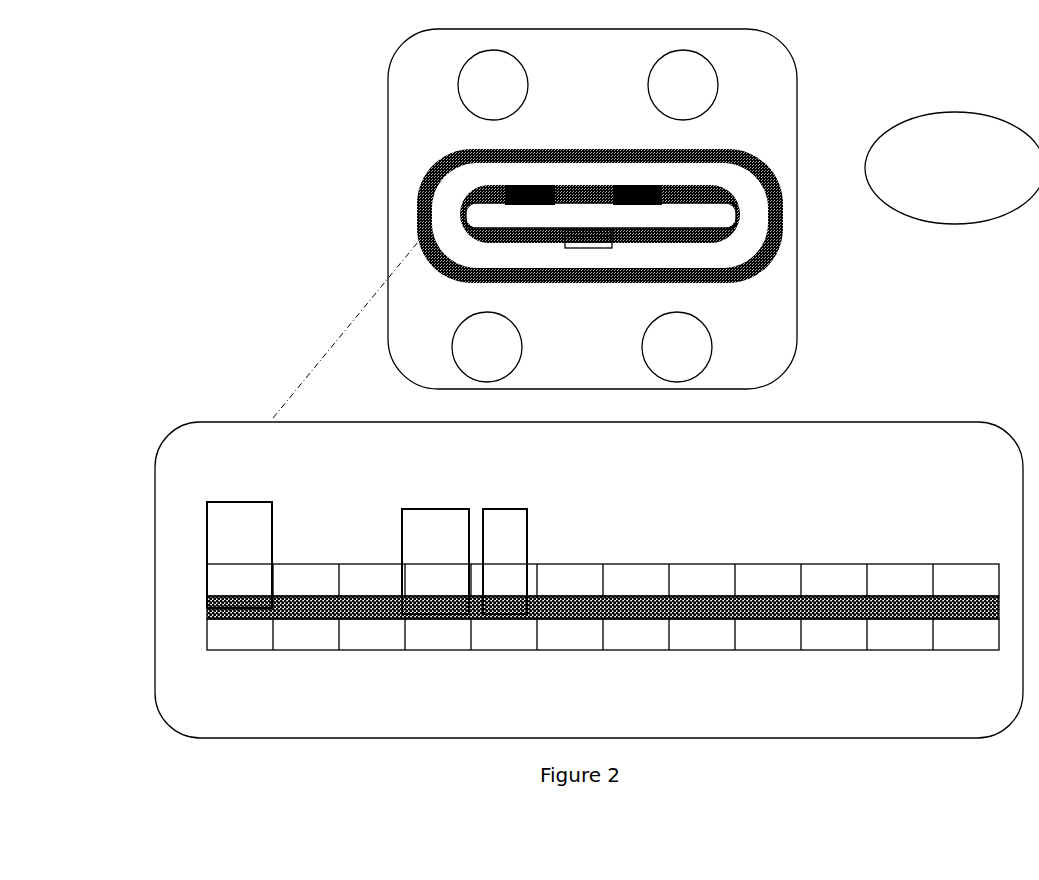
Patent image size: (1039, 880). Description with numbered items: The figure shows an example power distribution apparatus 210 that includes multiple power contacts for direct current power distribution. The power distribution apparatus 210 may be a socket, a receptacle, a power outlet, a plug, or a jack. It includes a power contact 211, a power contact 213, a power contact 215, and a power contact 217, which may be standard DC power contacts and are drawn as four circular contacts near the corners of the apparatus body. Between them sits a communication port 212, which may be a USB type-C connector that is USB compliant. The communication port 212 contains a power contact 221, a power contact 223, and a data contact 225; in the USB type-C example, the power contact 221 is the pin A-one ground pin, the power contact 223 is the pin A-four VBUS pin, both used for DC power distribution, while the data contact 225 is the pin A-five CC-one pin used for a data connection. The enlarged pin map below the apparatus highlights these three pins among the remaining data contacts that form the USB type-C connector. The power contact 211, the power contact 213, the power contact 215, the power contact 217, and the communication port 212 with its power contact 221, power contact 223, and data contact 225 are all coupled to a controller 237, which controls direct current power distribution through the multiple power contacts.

The power distribution apparatus 210 is at (592, 209).
The power contact 211 is at (683, 85).
The communication port 212 is at (589, 443).
The power contact 213 is at (493, 85).
The power contact 215 is at (677, 347).
The power contact 217 is at (487, 347).
The power contact 221 is at (248, 502).
The power contact 223 is at (457, 508).
The data contact 225 is at (527, 517).
The controller 237 is at (712, 348).